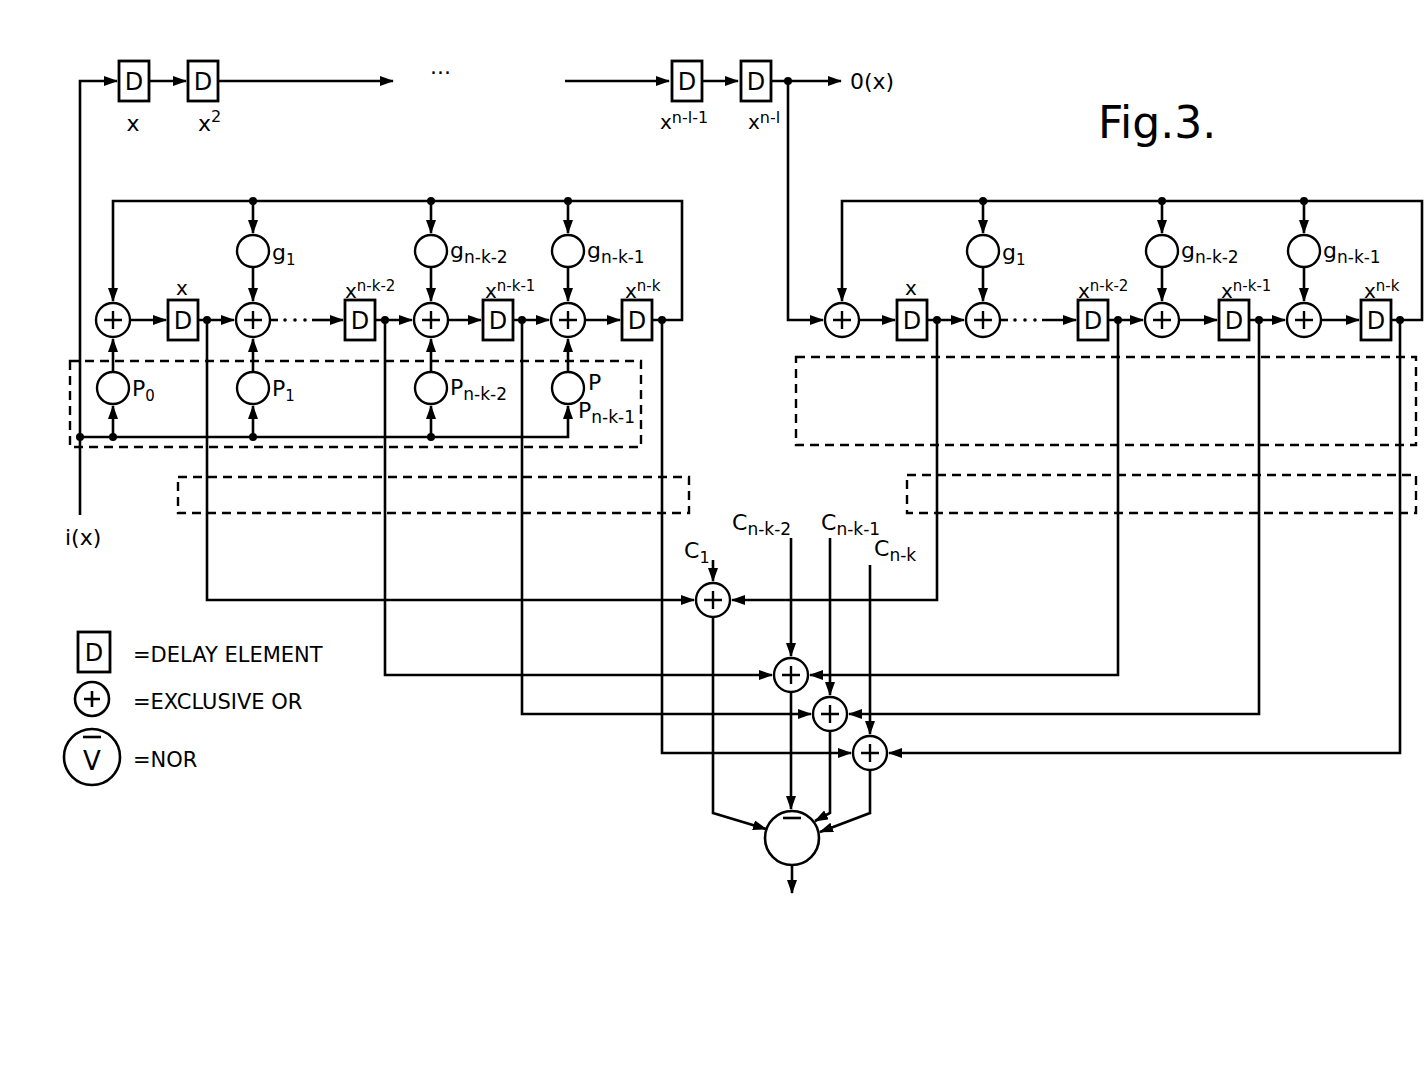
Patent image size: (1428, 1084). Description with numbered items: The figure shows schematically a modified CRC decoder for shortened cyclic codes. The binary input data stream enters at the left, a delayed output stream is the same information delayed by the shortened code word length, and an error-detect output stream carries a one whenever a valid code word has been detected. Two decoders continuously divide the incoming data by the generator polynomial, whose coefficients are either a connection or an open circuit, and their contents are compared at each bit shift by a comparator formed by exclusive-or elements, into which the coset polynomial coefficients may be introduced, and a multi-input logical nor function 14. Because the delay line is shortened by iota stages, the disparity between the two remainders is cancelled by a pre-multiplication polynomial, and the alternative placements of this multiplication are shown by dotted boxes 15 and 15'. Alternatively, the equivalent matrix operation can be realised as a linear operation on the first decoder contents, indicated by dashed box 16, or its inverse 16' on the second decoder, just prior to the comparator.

The multi-input logical nor function 14 is at (812, 851).
The dotted box 15 is at (392, 404).
The dotted box 15' is at (1077, 401).
The dashed box 16 is at (462, 487).
The dashed box 16' is at (1121, 487).